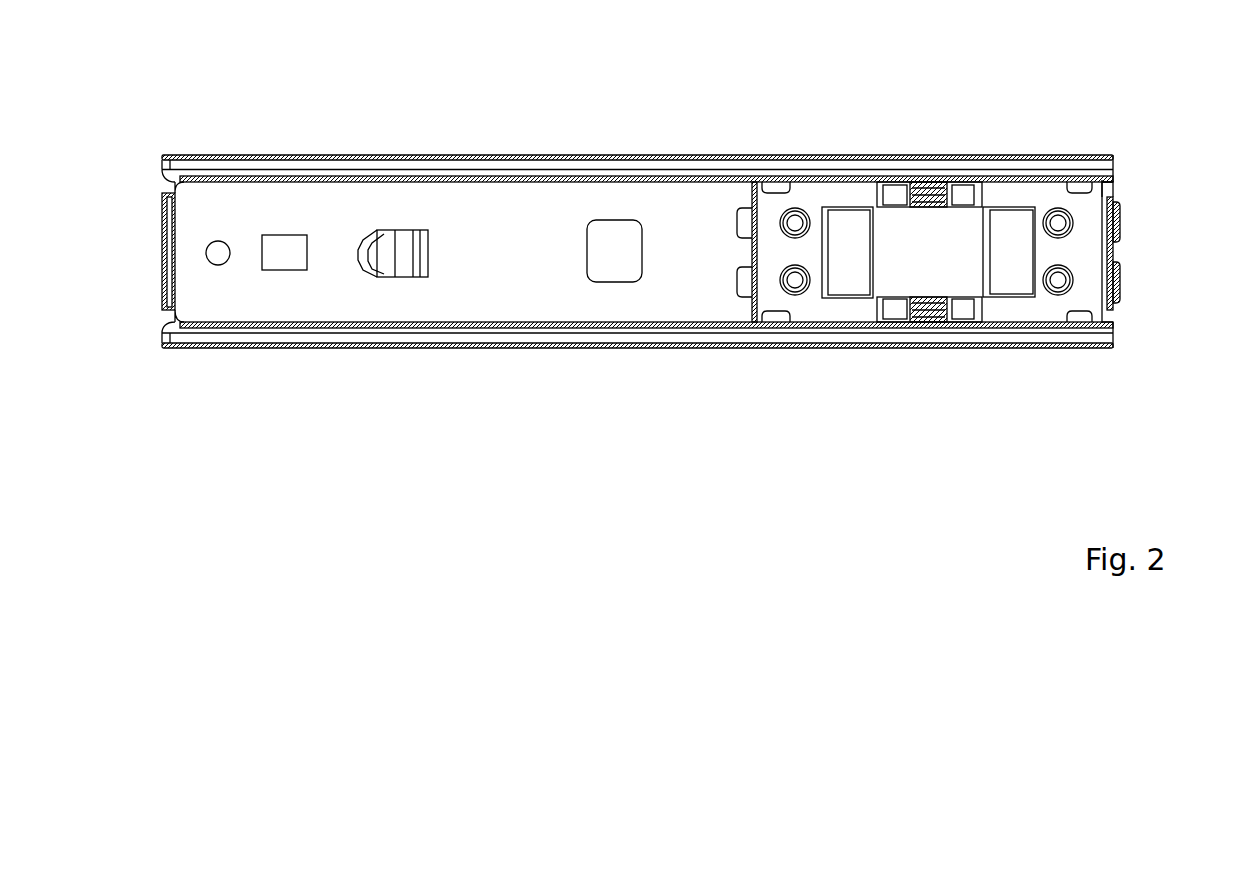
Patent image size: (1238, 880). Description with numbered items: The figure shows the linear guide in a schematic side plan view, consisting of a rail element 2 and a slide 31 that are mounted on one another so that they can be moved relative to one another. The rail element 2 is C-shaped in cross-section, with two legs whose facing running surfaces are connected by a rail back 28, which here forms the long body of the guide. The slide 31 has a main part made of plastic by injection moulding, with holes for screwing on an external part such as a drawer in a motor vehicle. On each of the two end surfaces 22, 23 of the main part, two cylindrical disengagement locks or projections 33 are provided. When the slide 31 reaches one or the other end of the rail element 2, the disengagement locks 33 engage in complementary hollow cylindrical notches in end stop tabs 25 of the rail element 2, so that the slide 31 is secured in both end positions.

The rail element 2 is at (402, 126).
The end surface 22 is at (752, 205).
The end surface 23 is at (1105, 188).
The end stop tab 25 is at (163, 225).
The rail back 28 is at (697, 290).
The slide 31 is at (1134, 251).
The disengagement lock 33 is at (1122, 227).